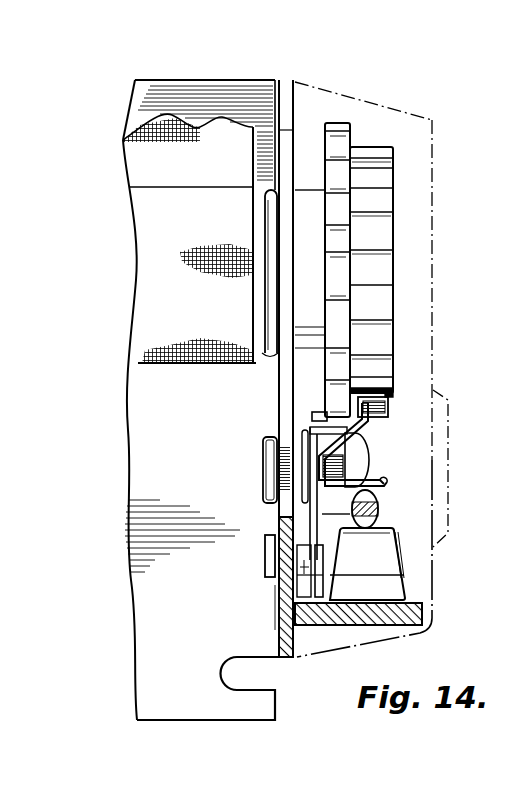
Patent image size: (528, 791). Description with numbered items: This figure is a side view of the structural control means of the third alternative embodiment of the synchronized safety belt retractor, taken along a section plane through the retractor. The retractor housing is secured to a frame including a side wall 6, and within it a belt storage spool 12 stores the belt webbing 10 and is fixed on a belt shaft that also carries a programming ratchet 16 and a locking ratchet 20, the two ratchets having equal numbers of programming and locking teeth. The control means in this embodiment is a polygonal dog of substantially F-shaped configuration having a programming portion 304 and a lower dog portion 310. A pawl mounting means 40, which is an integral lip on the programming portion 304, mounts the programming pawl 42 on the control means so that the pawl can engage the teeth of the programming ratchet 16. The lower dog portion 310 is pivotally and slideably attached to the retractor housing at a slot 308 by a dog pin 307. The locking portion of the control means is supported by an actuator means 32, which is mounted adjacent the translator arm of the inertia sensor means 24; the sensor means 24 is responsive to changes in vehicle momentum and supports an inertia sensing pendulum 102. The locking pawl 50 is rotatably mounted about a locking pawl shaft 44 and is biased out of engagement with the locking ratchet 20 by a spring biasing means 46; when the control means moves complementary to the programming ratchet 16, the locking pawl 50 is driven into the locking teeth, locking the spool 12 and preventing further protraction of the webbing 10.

The side wall 6 is at (148, 460).
The belt webbing 10 is at (150, 140).
The belt storage spool 12 is at (262, 228).
The programming ratchet 16 is at (378, 148).
The locking ratchet 20 is at (336, 128).
The inertia sensor means 24 is at (406, 561).
The actuator means 32 is at (383, 482).
The pawl mounting means 40 is at (387, 412).
The programming pawl 42 is at (388, 392).
The locking pawl shaft 44 is at (270, 462).
The spring biasing means 46 is at (277, 510).
The locking pawl 50 is at (313, 411).
The inertia sensing pendulum 102 is at (378, 587).
The programming portion 304 is at (340, 450).
The dog pin 307 is at (282, 590).
The slot 308 is at (267, 557).
The lower dog portion 310 is at (320, 595).